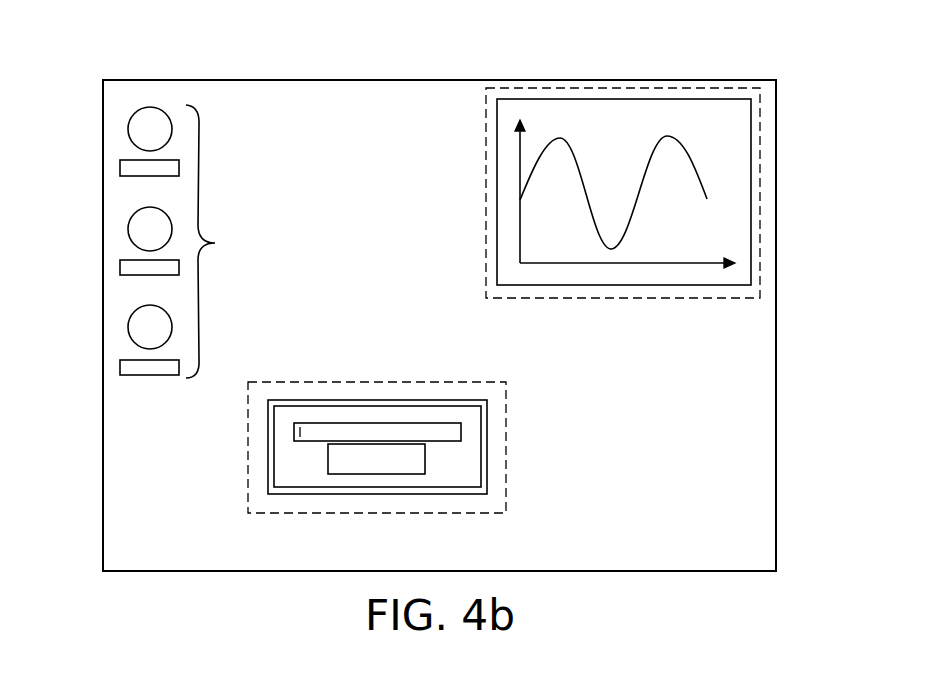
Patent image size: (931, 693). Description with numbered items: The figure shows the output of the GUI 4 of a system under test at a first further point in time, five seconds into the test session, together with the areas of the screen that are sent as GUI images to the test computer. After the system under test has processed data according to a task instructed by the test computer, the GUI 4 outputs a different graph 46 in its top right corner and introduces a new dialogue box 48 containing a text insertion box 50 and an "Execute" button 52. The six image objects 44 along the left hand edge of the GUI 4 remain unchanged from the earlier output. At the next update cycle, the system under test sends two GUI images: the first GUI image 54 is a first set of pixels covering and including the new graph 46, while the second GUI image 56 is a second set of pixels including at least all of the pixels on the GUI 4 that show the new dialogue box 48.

The GUI 4 is at (440, 80).
The image objects 44 is at (183, 241).
The graph 46 is at (497, 200).
The dialogue box 48 is at (487, 422).
The text insertion box 50 is at (380, 423).
The Execute button 52 is at (378, 475).
The first GUI image 54 is at (486, 162).
The second GUI image 56 is at (506, 476).